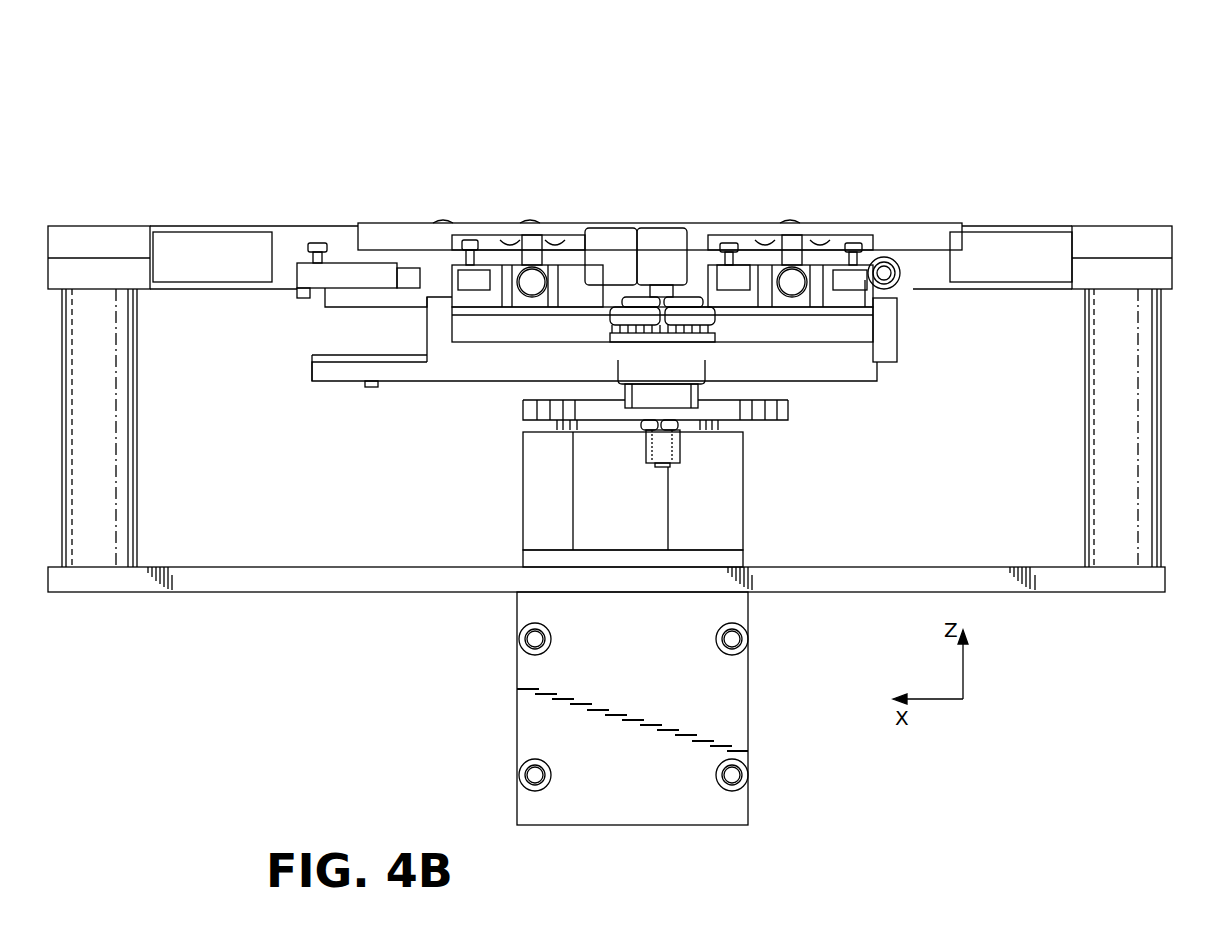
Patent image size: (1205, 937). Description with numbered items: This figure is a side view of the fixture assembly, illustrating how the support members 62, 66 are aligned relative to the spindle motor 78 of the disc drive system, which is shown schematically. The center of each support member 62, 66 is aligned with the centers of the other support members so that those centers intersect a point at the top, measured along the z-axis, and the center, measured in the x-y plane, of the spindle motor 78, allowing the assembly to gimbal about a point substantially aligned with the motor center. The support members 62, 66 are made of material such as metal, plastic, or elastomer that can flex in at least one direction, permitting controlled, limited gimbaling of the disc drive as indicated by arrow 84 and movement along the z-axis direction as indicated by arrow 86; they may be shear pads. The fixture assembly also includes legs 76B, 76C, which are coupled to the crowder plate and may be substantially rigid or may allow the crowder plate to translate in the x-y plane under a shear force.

The support member 62 is at (1007, 250).
The support member 66 is at (212, 244).
The leg 76B is at (1095, 501).
The leg 76C is at (130, 509).
The spindle motor 78 is at (595, 278).
The arrow 84 is at (578, 232).
The arrow 86 is at (610, 103).